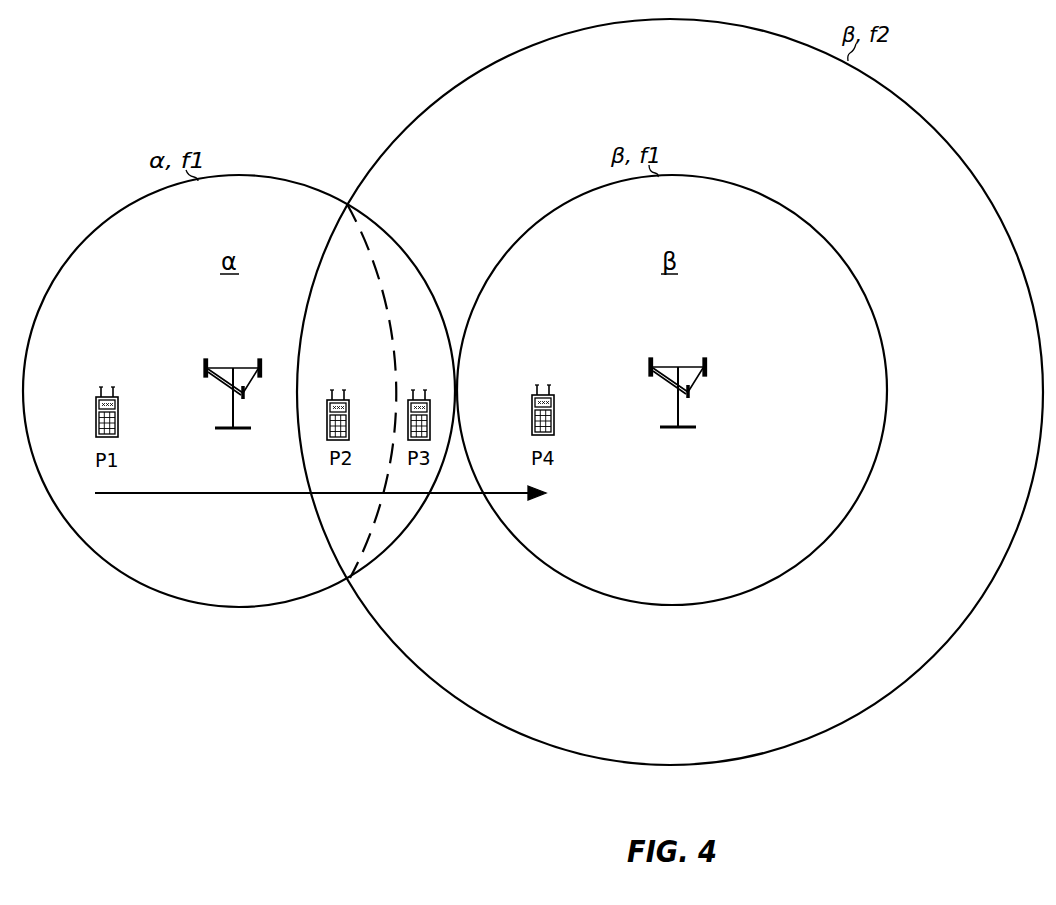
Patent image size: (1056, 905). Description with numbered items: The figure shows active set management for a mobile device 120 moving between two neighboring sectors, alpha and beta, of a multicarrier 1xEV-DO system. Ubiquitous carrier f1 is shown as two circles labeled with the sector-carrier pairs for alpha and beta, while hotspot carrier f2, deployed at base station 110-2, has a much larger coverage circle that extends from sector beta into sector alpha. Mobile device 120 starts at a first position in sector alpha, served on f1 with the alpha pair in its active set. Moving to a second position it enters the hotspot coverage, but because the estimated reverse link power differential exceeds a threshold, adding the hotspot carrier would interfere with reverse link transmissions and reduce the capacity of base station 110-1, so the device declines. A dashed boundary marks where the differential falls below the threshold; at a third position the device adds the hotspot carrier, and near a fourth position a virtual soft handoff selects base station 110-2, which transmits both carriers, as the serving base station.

The base station 110-1 is at (232, 367).
The base station 110-2 is at (673, 366).
The mobile device 120 is at (96, 404).